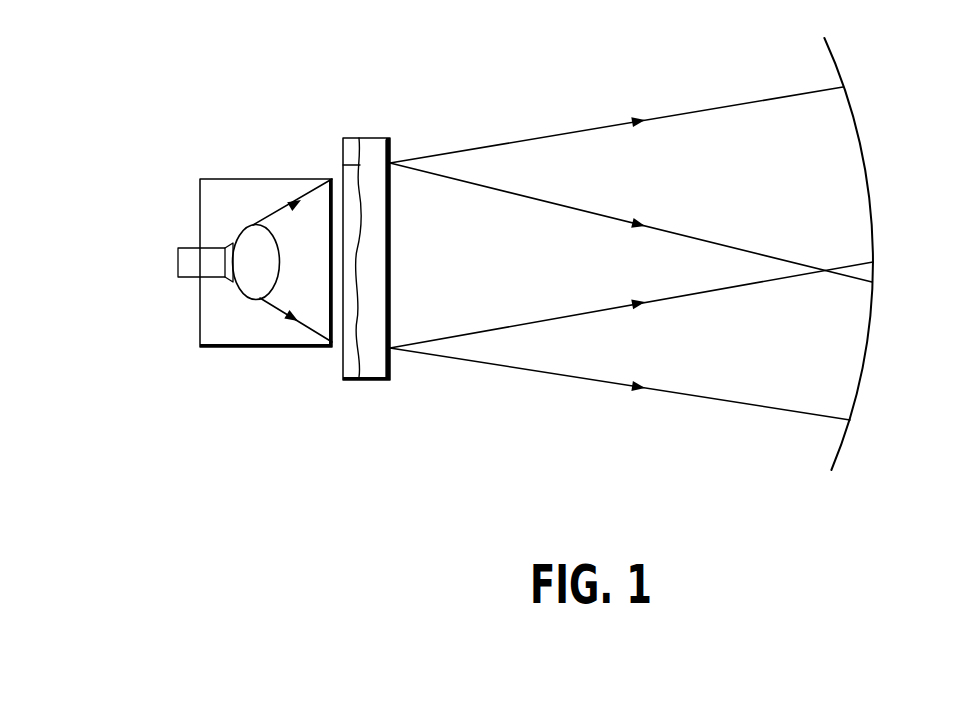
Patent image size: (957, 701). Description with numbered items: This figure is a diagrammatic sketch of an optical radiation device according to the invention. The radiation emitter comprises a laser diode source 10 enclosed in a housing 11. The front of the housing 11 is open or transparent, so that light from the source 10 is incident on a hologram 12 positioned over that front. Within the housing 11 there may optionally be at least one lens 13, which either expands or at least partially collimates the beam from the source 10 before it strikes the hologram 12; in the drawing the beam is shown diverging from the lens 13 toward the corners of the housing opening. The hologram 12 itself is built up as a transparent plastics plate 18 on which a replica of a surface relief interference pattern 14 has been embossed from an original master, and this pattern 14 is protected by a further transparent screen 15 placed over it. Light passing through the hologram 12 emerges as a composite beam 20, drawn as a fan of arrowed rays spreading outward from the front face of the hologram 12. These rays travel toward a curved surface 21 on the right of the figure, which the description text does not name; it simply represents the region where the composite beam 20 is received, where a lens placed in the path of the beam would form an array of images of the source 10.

The laser diode source 10 is at (195, 270).
The housing 11 is at (265, 348).
The hologram 12 is at (341, 273).
The lens 13 is at (257, 227).
The surface relief interference pattern 14 is at (343, 163).
The transparent screen 15 is at (375, 363).
The transparent plastics plate 18 is at (342, 370).
The composite beam 20 is at (665, 101).
The illuminated surface 21 is at (856, 131).